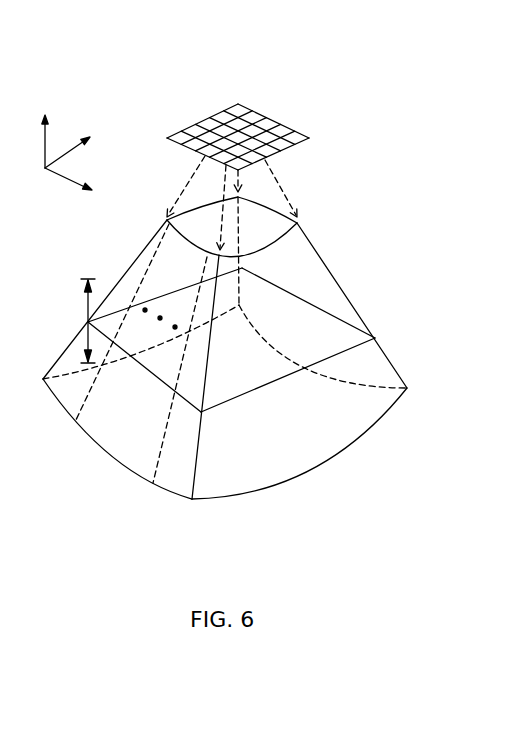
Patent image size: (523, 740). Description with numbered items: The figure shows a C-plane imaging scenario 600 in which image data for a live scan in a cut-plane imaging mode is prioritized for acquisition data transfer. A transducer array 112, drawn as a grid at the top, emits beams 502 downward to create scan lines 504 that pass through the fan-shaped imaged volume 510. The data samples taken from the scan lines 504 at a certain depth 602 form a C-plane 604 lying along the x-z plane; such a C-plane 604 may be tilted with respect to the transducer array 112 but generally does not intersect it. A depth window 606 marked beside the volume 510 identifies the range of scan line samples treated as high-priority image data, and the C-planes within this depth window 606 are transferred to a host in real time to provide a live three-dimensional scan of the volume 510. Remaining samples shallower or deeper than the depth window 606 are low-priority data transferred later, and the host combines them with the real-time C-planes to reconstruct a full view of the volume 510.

The C-plane imaging scenario 600 is at (316, 65).
The transducer array 112 is at (308, 138).
The beams 502 is at (287, 196).
The volume 510 is at (358, 438).
The scan lines 504 is at (99, 371).
The depth 602 is at (87, 322).
The C-plane 604 is at (256, 389).
The depth window 606 is at (83, 290).